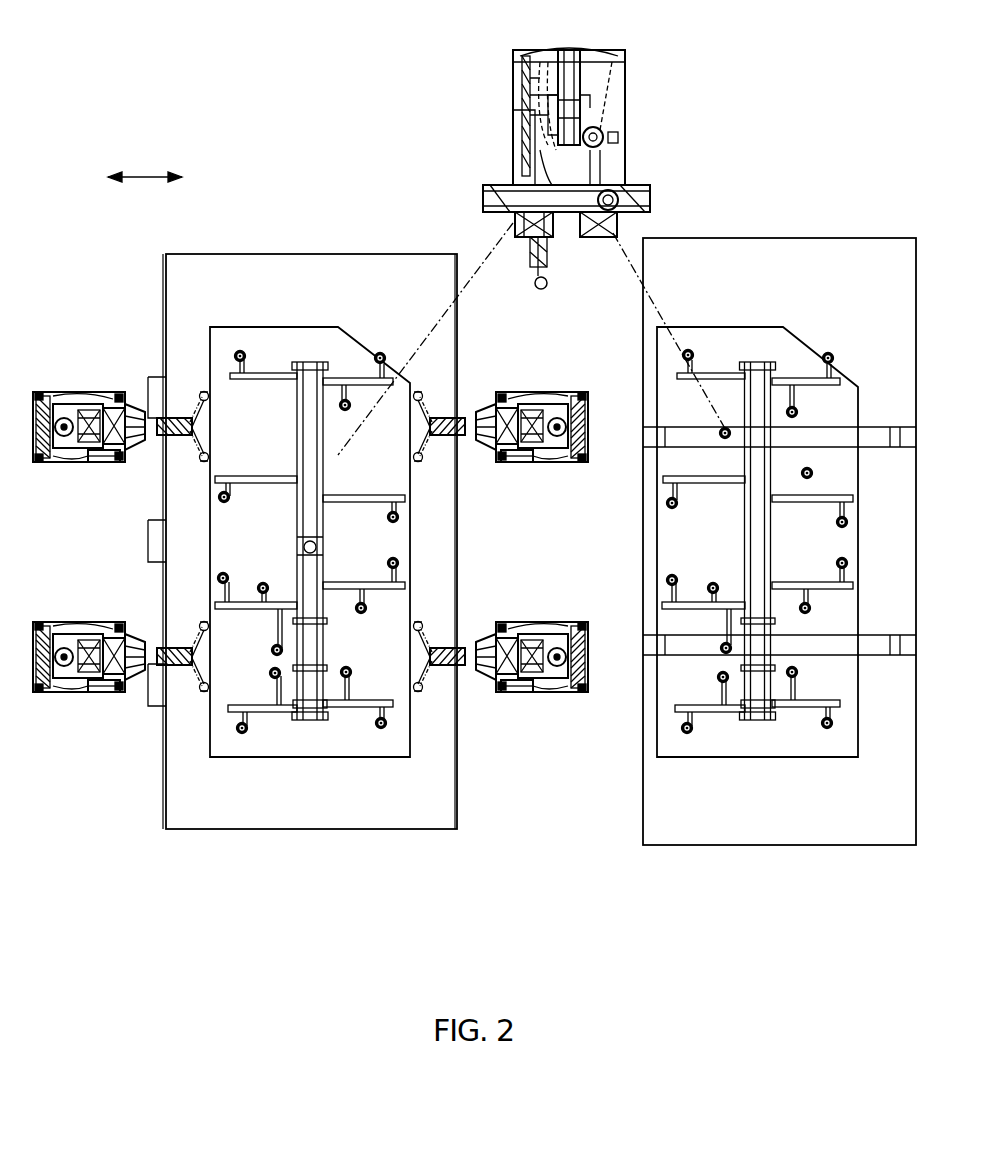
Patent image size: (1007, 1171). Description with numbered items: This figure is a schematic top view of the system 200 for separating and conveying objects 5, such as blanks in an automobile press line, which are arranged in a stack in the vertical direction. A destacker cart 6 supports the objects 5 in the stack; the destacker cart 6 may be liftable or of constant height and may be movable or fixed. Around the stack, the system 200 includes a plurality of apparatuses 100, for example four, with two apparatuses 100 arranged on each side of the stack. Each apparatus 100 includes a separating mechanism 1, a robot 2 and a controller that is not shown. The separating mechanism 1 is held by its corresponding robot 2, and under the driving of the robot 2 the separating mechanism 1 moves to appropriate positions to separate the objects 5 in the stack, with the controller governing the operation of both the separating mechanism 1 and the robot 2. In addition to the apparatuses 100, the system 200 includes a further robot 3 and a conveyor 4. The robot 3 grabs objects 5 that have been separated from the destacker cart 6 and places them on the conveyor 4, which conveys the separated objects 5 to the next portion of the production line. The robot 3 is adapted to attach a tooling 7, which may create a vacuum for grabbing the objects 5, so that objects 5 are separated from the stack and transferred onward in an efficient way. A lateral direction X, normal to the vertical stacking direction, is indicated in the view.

The system 200 is at (216, 58).
The robot 3 is at (628, 62).
The conveyor 4 is at (806, 236).
The objects 5 is at (300, 758).
The destacker cart 6 is at (362, 829).
The tooling 7 is at (272, 372).
The separating mechanism 1 is at (180, 405).
The robot 2 is at (80, 392).
The apparatus 100 is at (133, 400).